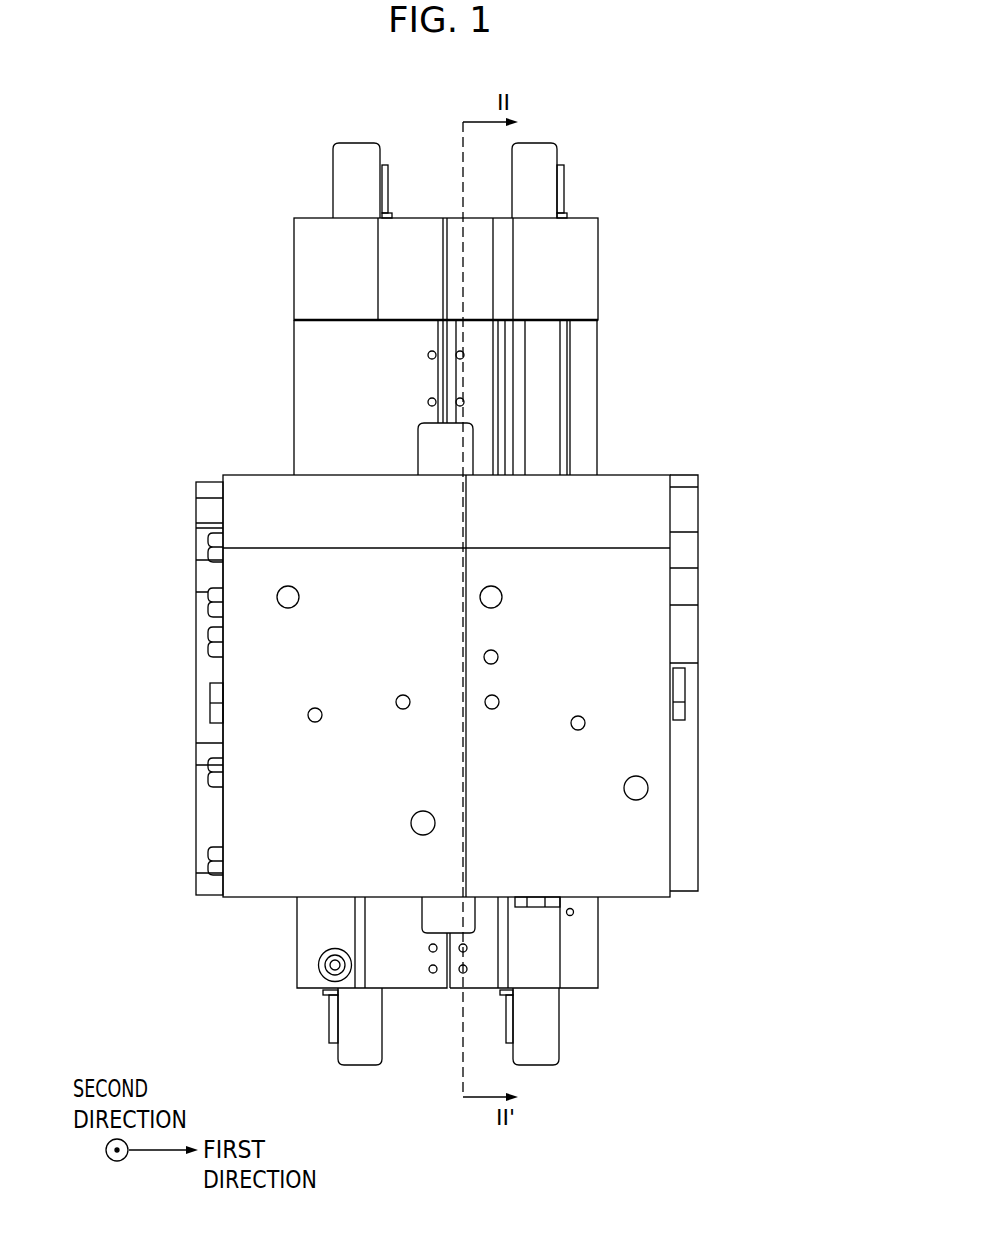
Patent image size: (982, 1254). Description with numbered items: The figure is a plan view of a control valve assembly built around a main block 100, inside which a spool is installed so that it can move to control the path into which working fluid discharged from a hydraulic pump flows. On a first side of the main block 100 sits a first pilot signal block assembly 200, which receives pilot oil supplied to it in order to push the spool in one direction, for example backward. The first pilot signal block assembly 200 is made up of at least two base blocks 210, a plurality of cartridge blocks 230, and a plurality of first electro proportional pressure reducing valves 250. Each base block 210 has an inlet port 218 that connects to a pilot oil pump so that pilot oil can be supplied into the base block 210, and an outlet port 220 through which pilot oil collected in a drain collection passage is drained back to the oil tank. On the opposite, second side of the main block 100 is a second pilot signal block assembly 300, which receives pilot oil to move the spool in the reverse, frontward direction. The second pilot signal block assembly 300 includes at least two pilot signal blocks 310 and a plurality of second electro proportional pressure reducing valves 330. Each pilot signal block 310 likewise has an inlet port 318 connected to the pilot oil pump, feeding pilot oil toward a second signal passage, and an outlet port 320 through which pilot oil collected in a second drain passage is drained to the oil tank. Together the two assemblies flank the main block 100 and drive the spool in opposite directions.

The main block 100 is at (722, 586).
The first pilot signal block assembly 200 is at (496, 309).
The base block 210 is at (307, 402).
The inlet port 218 is at (464, 402).
The outlet port 220 is at (464, 355).
The cartridge block 230 is at (307, 268).
The first electro proportional pressure reducing valve 250 is at (340, 188).
The second pilot signal block assembly 300 is at (455, 1012).
The pilot signal block 310 is at (313, 922).
The inlet port 318 is at (467, 948).
The outlet port 320 is at (467, 969).
The second electro proportional pressure reducing valve 330 is at (352, 1030).